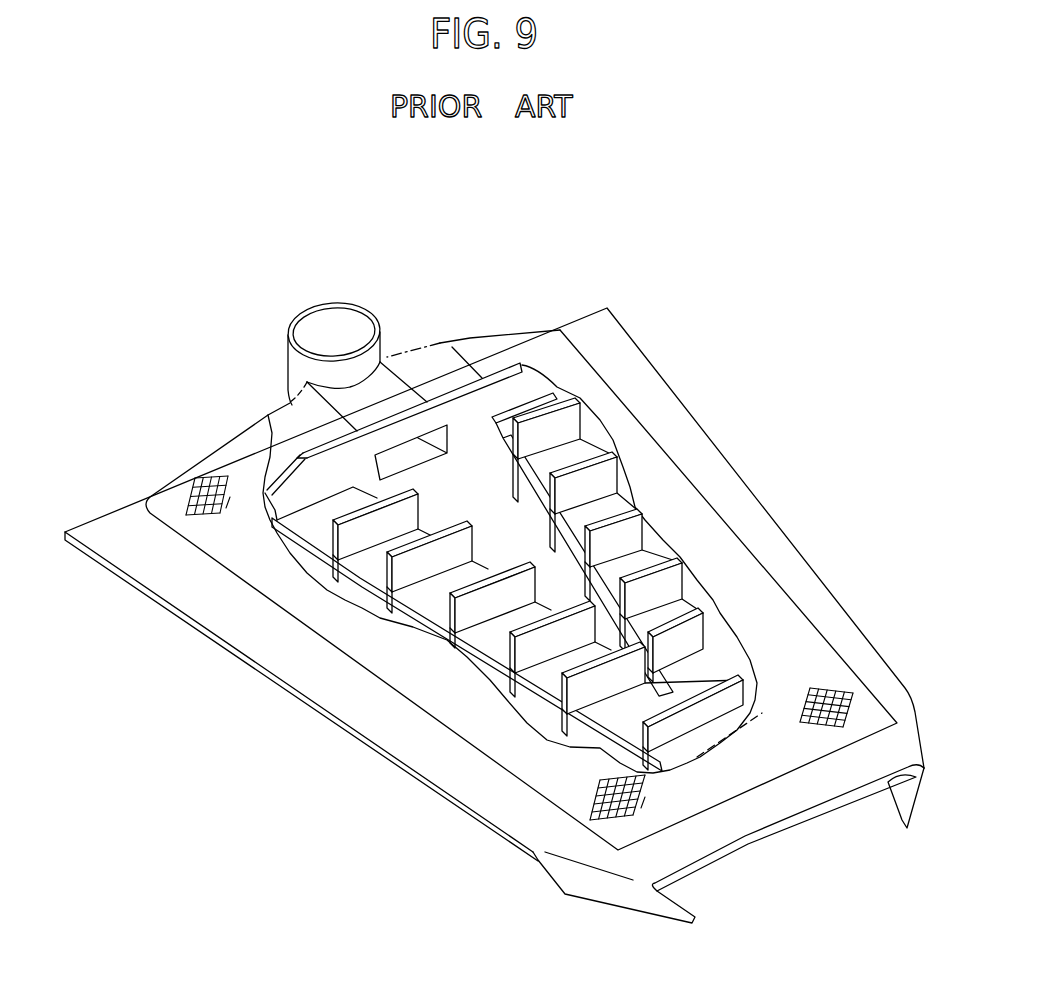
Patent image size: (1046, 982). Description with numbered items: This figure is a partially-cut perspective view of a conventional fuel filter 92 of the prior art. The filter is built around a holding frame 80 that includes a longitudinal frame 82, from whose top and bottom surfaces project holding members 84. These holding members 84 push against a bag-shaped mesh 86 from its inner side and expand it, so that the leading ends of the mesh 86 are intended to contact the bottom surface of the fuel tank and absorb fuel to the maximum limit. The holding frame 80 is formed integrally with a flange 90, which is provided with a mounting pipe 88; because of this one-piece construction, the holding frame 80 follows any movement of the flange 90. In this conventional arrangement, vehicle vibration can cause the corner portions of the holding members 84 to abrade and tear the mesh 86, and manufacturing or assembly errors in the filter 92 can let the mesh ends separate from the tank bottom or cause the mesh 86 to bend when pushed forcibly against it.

The holding frame 80 is at (484, 628).
The longitudinal frame 82 is at (503, 633).
The holding members 84 is at (333, 548).
The mesh 86 is at (707, 533).
The mounting pipe 88 is at (379, 328).
The flange 90 is at (462, 408).
The filter 92 is at (647, 360).